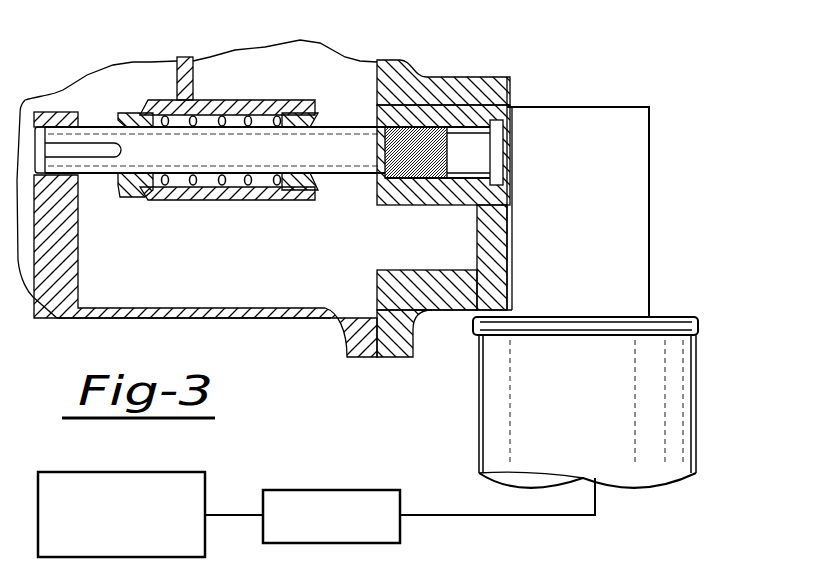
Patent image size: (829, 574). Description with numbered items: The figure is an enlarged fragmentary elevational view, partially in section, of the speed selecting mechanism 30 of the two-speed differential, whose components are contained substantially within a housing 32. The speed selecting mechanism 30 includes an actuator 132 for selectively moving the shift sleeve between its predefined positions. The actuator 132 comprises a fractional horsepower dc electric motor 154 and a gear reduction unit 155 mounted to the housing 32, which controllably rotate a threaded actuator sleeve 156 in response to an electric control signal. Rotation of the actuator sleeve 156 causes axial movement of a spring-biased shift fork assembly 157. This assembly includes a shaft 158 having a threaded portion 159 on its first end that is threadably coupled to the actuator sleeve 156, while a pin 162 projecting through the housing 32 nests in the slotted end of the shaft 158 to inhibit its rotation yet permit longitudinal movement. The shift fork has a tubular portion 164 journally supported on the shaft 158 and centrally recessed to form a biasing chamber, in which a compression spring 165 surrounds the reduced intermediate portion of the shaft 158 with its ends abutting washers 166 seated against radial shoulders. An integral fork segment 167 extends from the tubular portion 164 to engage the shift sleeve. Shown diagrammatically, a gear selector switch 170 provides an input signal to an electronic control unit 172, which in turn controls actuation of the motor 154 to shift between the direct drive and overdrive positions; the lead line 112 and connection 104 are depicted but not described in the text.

The speed selecting mechanism 30 is at (512, 72).
The housing 32 is at (423, 85).
The control line 104 is at (536, 543).
The electrical lead 112 is at (480, 526).
The actuator 132 is at (570, 104).
The electric motor 154 is at (657, 410).
The gear reduction unit 155 is at (627, 195).
The threaded actuator sleeve 156 is at (417, 190).
The shift fork assembly 157 is at (143, 95).
The shaft 158 is at (330, 163).
The threaded portion 159 is at (373, 180).
The pin 162 is at (78, 150).
The tubular portion 164 is at (238, 97).
The compression spring 165 is at (213, 200).
The washers 166 is at (143, 198).
The fork segment 167 is at (195, 68).
The gear selector switch 170 is at (205, 485).
The electronic control unit 172 is at (320, 488).